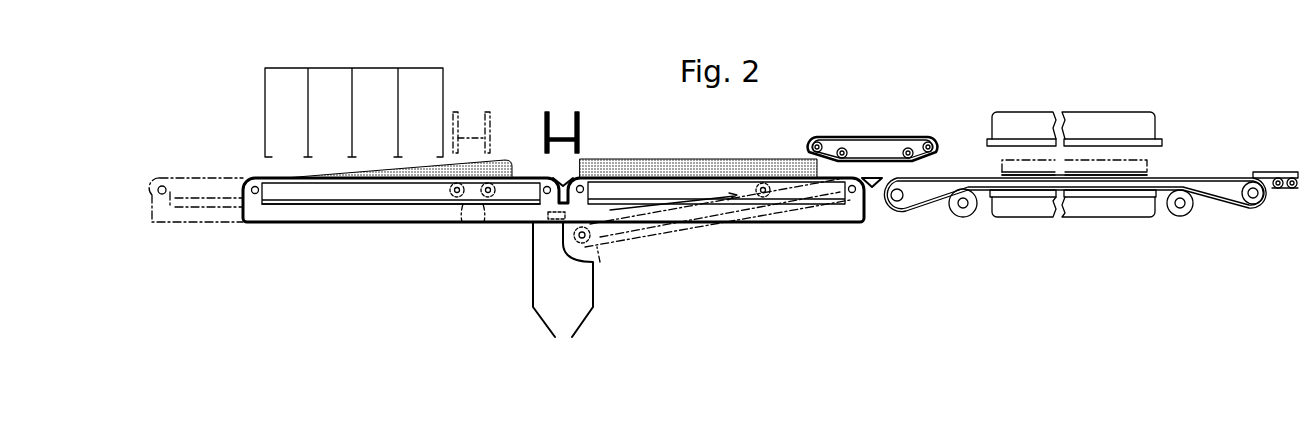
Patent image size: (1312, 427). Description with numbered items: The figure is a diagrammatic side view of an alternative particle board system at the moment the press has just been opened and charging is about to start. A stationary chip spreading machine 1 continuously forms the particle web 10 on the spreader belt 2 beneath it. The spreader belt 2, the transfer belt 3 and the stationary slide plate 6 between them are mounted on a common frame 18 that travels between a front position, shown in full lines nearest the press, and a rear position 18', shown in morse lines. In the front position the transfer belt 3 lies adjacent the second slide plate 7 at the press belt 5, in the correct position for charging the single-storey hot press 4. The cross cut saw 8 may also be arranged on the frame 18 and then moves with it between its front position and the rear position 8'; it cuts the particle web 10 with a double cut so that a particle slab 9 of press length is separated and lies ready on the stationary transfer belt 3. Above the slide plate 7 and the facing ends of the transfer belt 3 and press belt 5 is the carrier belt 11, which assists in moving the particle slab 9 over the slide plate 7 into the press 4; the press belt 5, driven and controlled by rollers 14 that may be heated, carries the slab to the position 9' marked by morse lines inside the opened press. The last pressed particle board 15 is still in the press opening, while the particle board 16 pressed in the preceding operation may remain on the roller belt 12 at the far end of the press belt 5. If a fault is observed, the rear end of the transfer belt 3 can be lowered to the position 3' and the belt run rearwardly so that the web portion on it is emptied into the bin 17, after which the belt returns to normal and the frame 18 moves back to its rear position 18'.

The chip spreading machine 1 is at (330, 68).
The spreader belt 2 is at (330, 205).
The transfer belt 3 is at (716, 222).
The lowered position of transfer belt 3' is at (712, 230).
The single-storey hot press 4 is at (1145, 125).
The press belt 5 is at (1225, 178).
The slide plate 6 is at (565, 174).
The slide plate 7 is at (877, 190).
The cross cut saw 8 is at (562, 117).
The rear position of cross cut saw 8' is at (478, 110).
The particle slab 9 is at (698, 151).
The particle slab position in press 9' is at (1048, 159).
The particle web 10 is at (500, 165).
The carrier belt 11 is at (890, 135).
The roller belt 12 is at (1290, 196).
The rollers 14 is at (960, 210).
The pressed particle board 15 is at (1073, 173).
The particle board 16 is at (1292, 175).
The bin 17 is at (540, 272).
The common frame 18 is at (401, 230).
The rear position of frame 18' is at (196, 219).